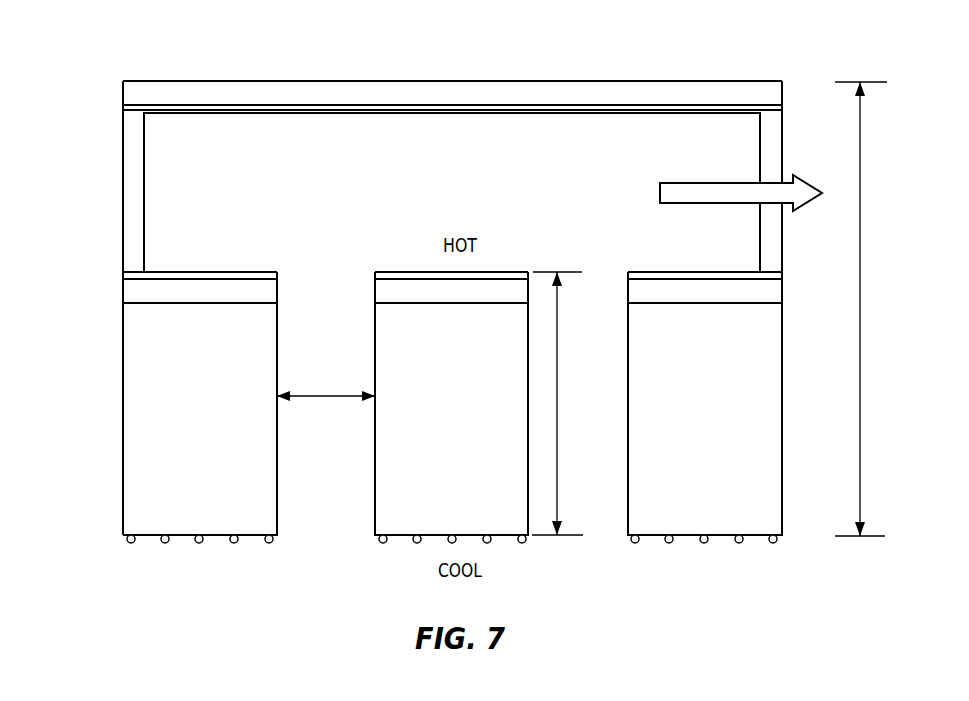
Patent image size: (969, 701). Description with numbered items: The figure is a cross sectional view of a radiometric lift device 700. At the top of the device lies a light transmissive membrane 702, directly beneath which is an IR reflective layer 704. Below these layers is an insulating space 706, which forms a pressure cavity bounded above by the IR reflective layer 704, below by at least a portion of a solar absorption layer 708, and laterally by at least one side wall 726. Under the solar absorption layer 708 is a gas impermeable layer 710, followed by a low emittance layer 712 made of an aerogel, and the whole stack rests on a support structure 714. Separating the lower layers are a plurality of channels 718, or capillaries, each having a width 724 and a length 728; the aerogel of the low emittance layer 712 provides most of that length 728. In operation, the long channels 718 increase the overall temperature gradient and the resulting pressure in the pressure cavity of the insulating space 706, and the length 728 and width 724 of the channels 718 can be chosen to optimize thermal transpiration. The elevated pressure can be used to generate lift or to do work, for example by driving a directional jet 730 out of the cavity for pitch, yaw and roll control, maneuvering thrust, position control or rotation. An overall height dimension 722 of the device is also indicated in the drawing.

The radiometric lift device 700 is at (196, 52).
The light transmissive membrane 702 is at (123, 95).
The IR reflective layer 704 is at (123, 108).
The insulating space 706 is at (168, 200).
The solar absorption layer 708 is at (123, 273).
The gas impermeable layer 710 is at (123, 295).
The low emittance layer 712 is at (123, 508).
The support structure 714 is at (199, 543).
The channels 718 is at (328, 508).
The overall height 722 is at (860, 403).
The width 724 is at (331, 398).
The side wall 726 is at (782, 140).
The length 728 is at (557, 440).
The directional jet 730 is at (695, 183).